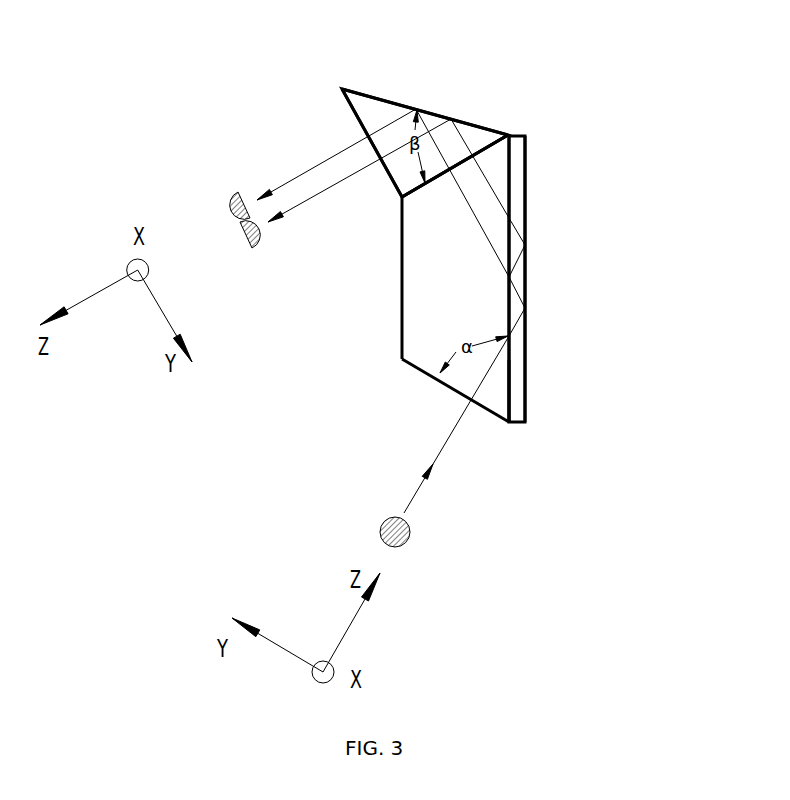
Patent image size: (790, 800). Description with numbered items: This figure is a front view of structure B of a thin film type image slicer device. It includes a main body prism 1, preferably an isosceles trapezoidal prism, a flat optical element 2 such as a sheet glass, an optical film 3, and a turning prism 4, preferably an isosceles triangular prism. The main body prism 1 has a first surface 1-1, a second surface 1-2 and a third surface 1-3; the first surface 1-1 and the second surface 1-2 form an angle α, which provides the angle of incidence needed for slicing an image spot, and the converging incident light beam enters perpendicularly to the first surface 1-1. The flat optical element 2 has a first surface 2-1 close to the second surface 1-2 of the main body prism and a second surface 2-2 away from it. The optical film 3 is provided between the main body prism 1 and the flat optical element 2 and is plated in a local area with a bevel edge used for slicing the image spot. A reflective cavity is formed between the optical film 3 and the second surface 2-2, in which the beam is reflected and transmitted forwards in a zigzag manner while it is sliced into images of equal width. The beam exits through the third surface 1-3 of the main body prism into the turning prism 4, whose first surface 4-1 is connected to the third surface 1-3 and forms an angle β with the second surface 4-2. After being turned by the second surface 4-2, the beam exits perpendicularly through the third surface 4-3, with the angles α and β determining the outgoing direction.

The main body prism 1 is at (427, 333).
The first surface of the main body prism 1-1 is at (419, 373).
The second surface of the main body prism 1-2 is at (509, 397).
The third surface of the main body prism 1-3 is at (486, 147).
The flat optical element 2 is at (517, 354).
The first surface of the flat optical element 2-1 is at (509, 372).
The second surface of the flat optical element 2-2 is at (525, 279).
The optical film 3 is at (509, 245).
The turning prism 4 is at (407, 178).
The first surface of the turning prism 4-1 is at (415, 188).
The second surface of the turning prism 4-2 is at (385, 103).
The third surface of the turning prism 4-3 is at (353, 112).